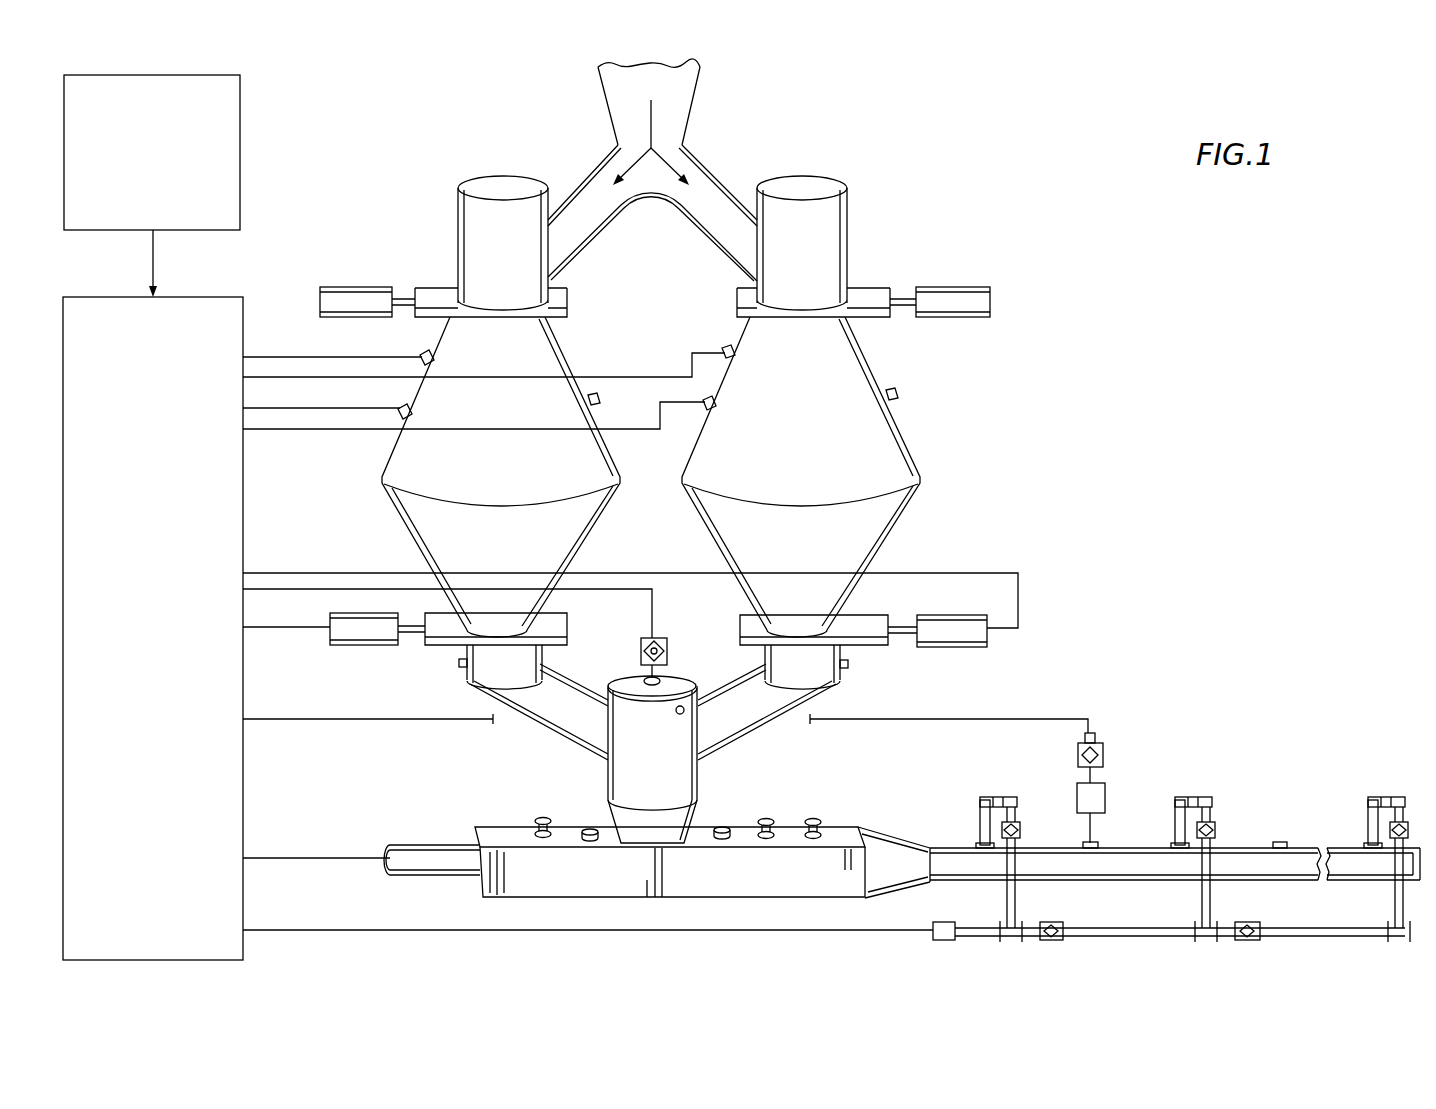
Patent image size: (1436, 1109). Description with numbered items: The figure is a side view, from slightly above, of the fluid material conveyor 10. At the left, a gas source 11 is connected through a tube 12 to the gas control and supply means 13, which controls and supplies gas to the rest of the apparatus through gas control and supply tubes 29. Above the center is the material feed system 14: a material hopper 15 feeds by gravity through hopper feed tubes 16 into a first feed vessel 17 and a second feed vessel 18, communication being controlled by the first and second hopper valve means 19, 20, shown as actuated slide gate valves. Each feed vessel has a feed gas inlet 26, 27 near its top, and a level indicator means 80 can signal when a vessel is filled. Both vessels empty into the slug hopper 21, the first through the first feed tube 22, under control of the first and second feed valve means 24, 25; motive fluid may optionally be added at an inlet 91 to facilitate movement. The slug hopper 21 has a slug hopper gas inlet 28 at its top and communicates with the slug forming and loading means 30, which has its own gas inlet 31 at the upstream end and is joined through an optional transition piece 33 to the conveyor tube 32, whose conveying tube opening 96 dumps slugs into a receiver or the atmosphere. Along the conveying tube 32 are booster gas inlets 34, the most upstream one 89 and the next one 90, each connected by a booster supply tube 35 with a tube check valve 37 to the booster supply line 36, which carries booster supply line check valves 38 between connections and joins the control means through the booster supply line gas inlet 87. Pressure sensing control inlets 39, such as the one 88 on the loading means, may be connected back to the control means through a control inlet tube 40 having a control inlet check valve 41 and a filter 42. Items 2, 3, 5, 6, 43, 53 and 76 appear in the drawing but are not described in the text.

The section line 2- 2 is at (438, 860).
The section line 3- 3 is at (556, 805).
The section line 5- 5 is at (722, 803).
The section line 6- 6 is at (502, 140).
The fluid material conveyor 10 is at (1052, 408).
The gas source 11 is at (243, 140).
The tube 12 is at (153, 258).
The gas control and supply means 13 is at (243, 497).
The material feed system 14 is at (885, 142).
The material hopper 15 is at (700, 98).
The hopper feed tubes 16 is at (683, 213).
The first feed vessel 17 is at (397, 508).
The second feed vessel 18 is at (913, 447).
The first hopper valve means 19 is at (567, 302).
The second hopper valve means 20 is at (876, 287).
The slug hopper 21 is at (639, 797).
The first feed tube 22 is at (573, 683).
The first feed valve means 24 is at (567, 625).
The second feed valve means 25 is at (875, 613).
The first feed gas inlet 26 is at (430, 356).
The second feed gas inlet 27 is at (724, 348).
The slug hopper gas inlet 28 is at (663, 679).
The gas control and supply tubes 29 is at (279, 357).
The slug forming and loading means 30 is at (700, 822).
The slug forming and loading gas inlet 31 is at (443, 876).
The conveyor tube 32 is at (1162, 847).
The transition piece 33 is at (873, 828).
The booster gas inlets 34 is at (979, 843).
The booster supply tube 35 is at (1018, 901).
The booster supply line 36 is at (1140, 940).
The tube check valve 37 is at (1019, 822).
The booster supply line check valves 38 is at (1065, 926).
The pressure sensing control inlet 39 is at (600, 400).
The control inlet tube 40 is at (1098, 780).
The control inlet check valve 41 is at (1103, 746).
The filter 42 is at (1107, 798).
The mixing chamber 43 is at (800, 882).
The fitting 53 is at (537, 823).
The valve actuator 76 is at (357, 287).
The level indicator means 80 is at (416, 413).
The booster supply line gas inlet 87 is at (940, 941).
The pressure sensing control inlet 88 is at (725, 838).
The first booster gas inlet 89 is at (987, 848).
The second booster gas inlet 90 is at (1187, 840).
The inlet 91 is at (459, 663).
The conveying tube opening 96 is at (1423, 848).